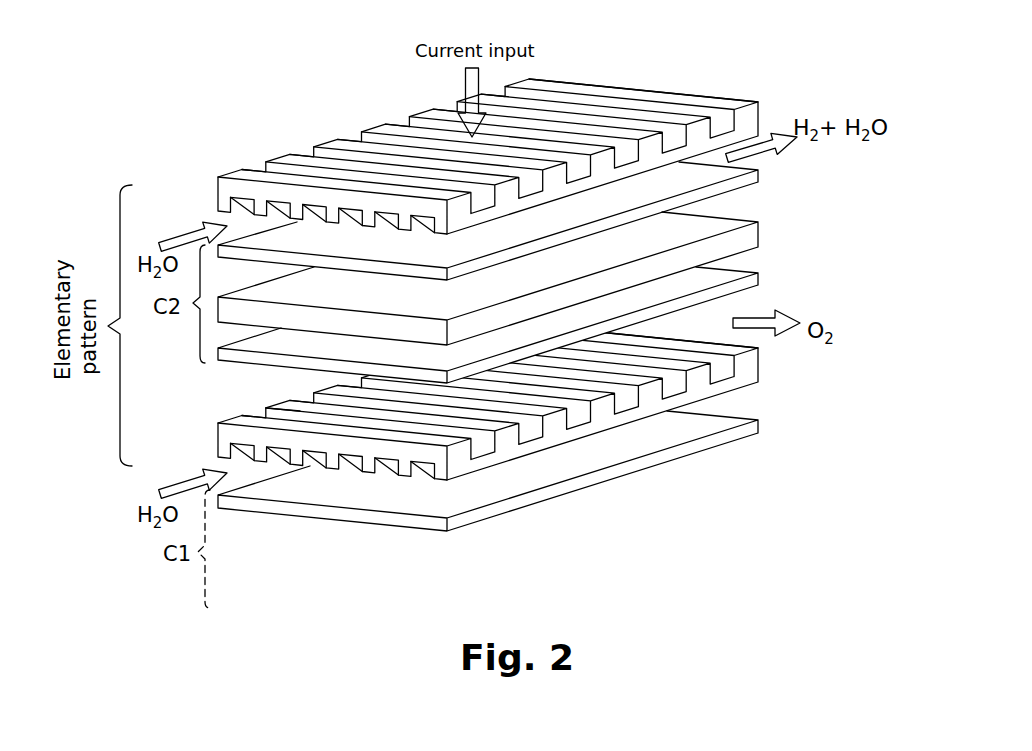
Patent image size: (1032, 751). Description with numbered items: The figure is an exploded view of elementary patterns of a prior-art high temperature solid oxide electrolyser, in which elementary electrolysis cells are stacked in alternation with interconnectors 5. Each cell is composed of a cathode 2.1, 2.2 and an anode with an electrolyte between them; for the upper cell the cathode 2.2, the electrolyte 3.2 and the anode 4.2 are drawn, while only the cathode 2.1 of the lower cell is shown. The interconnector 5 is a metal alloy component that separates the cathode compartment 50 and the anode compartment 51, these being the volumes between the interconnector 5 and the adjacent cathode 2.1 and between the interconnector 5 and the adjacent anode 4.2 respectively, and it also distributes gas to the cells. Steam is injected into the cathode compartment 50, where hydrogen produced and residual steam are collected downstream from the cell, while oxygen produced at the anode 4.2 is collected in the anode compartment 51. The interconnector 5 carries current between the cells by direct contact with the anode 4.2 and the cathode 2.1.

The interconnector 5 is at (218, 187).
The cathode compartment 50 is at (230, 219).
The anode compartment 51 is at (261, 392).
The cathode 2.1 is at (752, 425).
The cathode 2.2 is at (750, 174).
The electrolyte 3.2 is at (750, 229).
The anode 4.2 is at (750, 281).